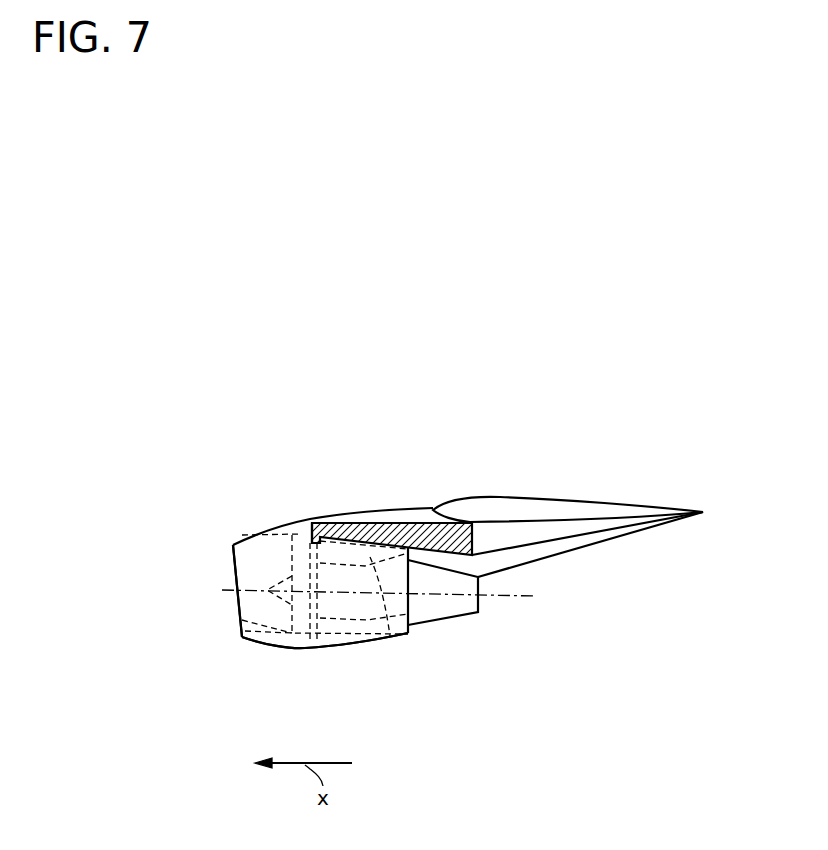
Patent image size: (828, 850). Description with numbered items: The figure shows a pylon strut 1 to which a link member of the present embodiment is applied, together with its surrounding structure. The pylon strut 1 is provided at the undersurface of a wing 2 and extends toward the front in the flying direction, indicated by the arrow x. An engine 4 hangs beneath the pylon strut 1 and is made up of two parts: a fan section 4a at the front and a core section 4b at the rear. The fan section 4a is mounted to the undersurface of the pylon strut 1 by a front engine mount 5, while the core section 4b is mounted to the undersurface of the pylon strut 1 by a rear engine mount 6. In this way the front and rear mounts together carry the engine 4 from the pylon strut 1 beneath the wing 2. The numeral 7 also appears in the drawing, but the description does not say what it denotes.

The pylon strut 1 is at (384, 523).
The wing 2 is at (548, 497).
The engine 4 is at (290, 650).
The fan section 4a is at (242, 607).
The core section 4b is at (430, 621).
The front engine mount 5 is at (304, 536).
The rear engine mount 6 is at (388, 642).
The nacelle lower casing 7 is at (318, 649).